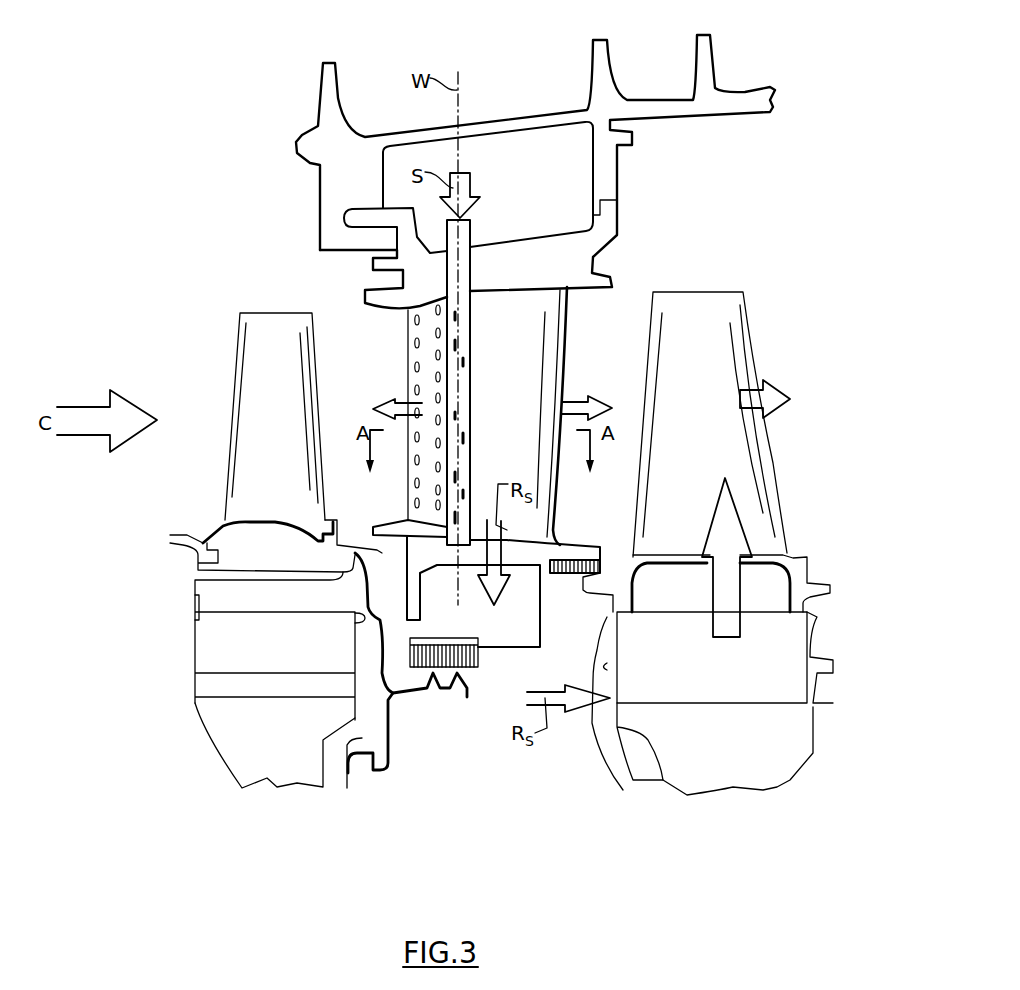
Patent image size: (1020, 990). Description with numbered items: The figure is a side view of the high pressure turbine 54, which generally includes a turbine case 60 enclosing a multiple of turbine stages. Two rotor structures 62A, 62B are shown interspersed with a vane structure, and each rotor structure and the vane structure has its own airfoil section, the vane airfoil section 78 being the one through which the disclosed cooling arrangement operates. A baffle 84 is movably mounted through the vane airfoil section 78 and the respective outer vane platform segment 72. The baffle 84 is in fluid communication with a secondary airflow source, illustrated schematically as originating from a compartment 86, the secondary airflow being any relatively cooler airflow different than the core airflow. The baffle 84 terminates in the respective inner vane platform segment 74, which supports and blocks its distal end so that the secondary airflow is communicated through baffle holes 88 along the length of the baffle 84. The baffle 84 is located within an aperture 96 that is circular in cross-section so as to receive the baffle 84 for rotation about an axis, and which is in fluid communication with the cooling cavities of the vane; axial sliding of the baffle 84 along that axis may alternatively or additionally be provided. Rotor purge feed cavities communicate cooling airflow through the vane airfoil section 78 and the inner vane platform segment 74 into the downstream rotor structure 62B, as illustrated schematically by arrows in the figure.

The high pressure turbine 54 is at (776, 190).
The turbine case 60 is at (717, 80).
The rotor structure 62A is at (301, 550).
The rotor structure 62B is at (717, 541).
The outer vane platform segment 72 is at (603, 233).
The inner vane platform segment 74 is at (570, 553).
The vane airfoil section 78 is at (548, 384).
The baffle 84 is at (487, 231).
The compartment 86 is at (571, 171).
The baffle holes 88 is at (463, 362).
The aperture 96 is at (440, 333).